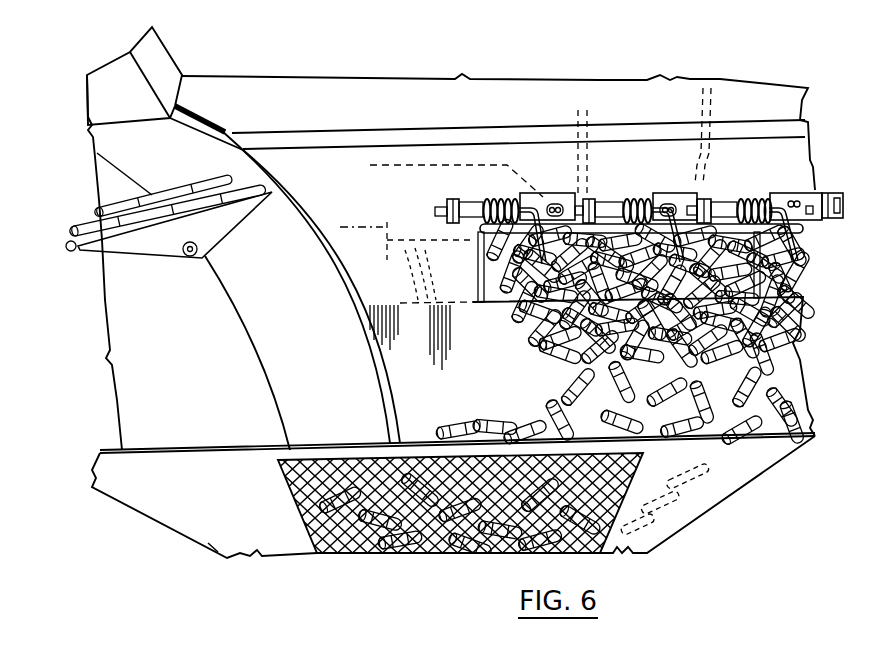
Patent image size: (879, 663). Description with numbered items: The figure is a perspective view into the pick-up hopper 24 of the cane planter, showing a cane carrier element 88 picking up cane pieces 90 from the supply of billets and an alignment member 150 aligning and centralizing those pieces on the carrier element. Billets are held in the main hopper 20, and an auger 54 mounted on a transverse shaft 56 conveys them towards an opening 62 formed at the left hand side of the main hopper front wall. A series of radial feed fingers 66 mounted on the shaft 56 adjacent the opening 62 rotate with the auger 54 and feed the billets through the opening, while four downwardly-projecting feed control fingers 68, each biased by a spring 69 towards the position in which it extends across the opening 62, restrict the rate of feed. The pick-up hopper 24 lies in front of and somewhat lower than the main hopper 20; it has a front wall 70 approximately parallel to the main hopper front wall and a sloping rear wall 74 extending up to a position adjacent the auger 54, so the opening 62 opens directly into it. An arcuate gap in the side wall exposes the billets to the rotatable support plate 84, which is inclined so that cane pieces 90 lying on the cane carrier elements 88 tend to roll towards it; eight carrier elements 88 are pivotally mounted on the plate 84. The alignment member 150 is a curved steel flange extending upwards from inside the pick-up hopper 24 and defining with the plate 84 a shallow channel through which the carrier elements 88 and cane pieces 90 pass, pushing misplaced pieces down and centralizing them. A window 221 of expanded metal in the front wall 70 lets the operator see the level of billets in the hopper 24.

The main hopper 20 is at (810, 100).
The pick-up hopper 24 is at (723, 503).
The auger 54 is at (487, 283).
The shaft 56 is at (410, 260).
The opening 62 is at (480, 238).
The radial feed fingers 66 is at (612, 200).
The feed control fingers 68 is at (528, 197).
The spring 69 is at (497, 199).
The front wall 70 is at (213, 543).
The sloping rear wall 74 is at (410, 335).
The rotatable support plate 84 is at (197, 162).
The cane carrier elements 88 is at (152, 249).
The cane pieces 90 is at (117, 213).
The alignment member 150 is at (198, 128).
The window 221 is at (300, 503).